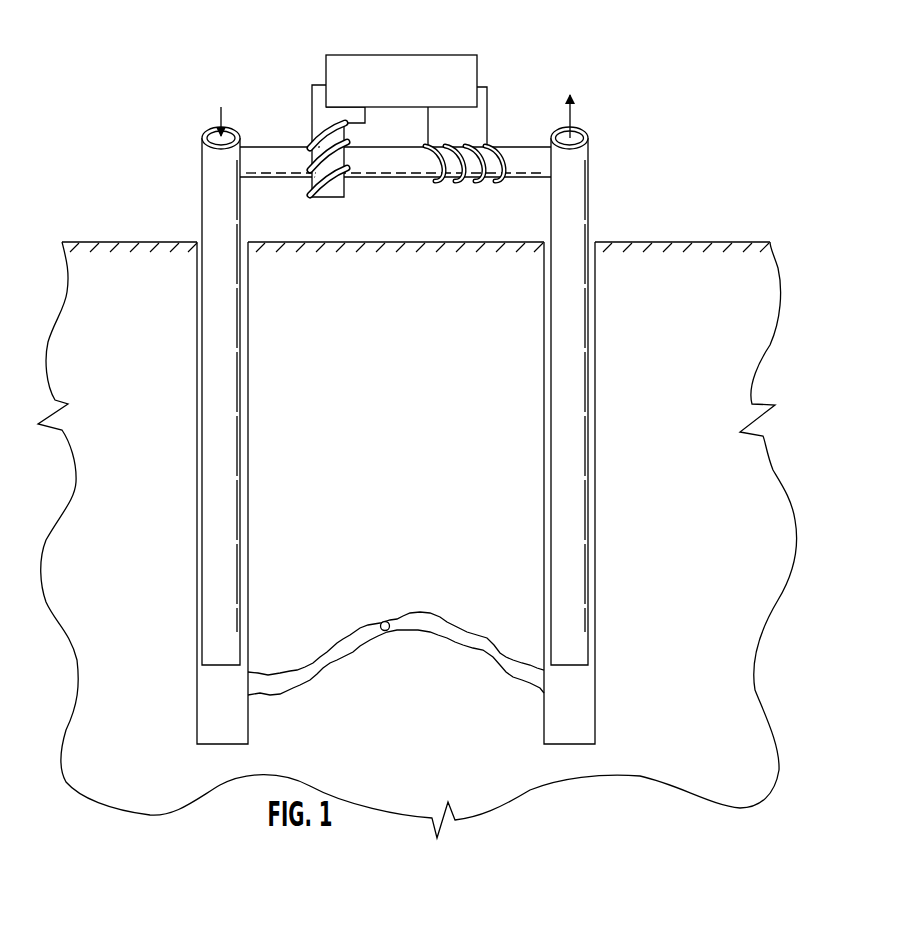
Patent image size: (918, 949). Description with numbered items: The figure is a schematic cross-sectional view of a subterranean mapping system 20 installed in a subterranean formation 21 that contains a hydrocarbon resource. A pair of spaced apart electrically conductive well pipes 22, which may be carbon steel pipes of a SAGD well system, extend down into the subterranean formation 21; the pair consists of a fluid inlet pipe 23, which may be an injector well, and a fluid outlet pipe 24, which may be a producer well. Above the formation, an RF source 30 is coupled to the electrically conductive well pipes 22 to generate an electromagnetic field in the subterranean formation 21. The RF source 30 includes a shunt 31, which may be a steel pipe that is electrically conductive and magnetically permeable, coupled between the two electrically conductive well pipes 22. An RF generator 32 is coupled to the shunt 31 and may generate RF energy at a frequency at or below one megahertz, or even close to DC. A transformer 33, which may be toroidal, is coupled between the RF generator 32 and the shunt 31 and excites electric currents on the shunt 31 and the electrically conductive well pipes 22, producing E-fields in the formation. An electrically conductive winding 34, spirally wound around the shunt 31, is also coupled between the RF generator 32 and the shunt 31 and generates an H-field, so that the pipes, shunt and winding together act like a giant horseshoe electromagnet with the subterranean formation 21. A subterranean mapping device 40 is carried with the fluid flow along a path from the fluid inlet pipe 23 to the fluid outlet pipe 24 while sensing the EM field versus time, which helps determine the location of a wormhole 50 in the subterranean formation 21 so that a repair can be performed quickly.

The subterranean mapping system 20 is at (141, 106).
The subterranean formation 21 is at (107, 275).
The electrically conductive well pipes 22 is at (200, 172).
The fluid inlet pipe 23 is at (217, 220).
The fluid outlet pipe 24 is at (573, 200).
The RF source 30 is at (306, 101).
The shunt 31 is at (513, 155).
The RF generator 32 is at (453, 62).
The transformer 33 is at (310, 146).
The electrically conductive winding 34 is at (497, 178).
The subterranean mapping device 40 is at (388, 632).
The wormhole 50 is at (288, 677).